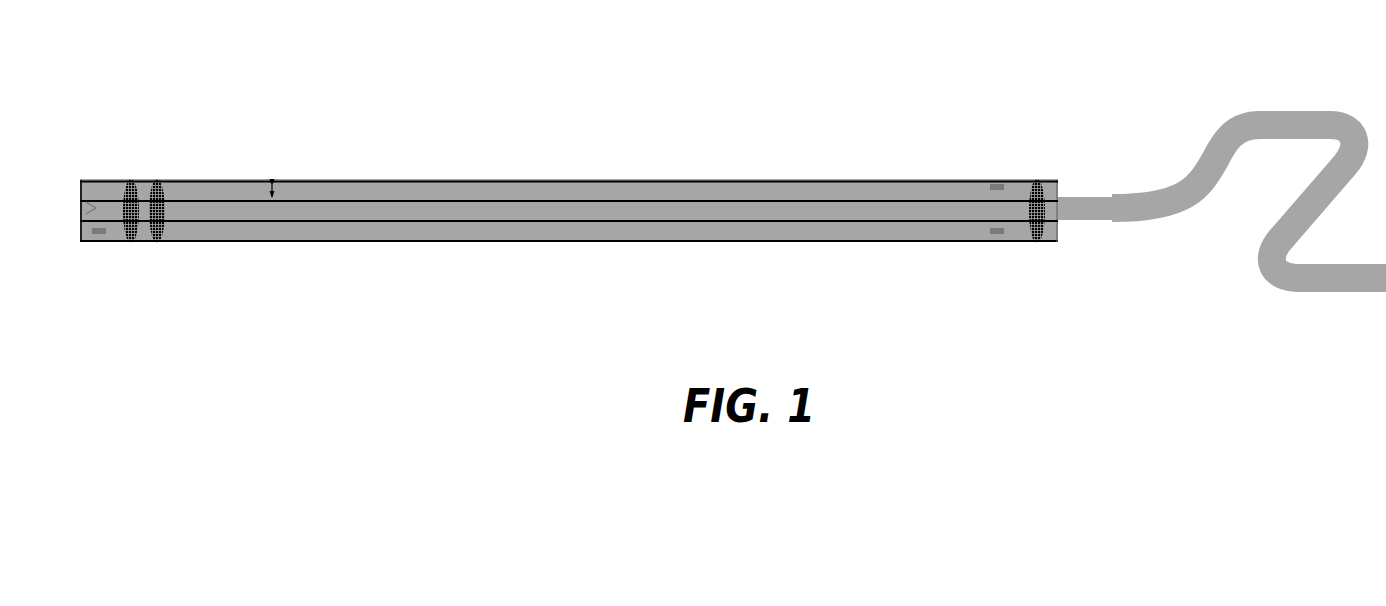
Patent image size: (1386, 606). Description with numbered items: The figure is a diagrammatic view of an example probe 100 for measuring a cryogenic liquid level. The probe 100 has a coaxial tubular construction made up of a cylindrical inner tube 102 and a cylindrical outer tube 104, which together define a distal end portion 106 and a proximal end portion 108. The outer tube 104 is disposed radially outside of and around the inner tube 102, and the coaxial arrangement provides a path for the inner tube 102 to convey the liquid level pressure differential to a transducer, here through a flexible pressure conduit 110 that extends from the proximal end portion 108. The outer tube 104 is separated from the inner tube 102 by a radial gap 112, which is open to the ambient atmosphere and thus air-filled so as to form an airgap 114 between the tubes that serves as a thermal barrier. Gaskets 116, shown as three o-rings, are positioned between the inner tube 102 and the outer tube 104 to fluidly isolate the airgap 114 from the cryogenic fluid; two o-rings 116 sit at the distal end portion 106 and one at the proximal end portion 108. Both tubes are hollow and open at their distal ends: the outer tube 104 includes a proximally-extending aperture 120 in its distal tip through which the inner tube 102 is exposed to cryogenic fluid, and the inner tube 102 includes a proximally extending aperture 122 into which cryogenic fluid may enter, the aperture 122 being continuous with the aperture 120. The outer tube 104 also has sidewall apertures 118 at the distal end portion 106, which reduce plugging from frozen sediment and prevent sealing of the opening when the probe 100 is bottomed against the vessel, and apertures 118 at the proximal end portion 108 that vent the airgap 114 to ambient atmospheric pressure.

The probe 100 is at (690, 46).
The inner tube 102 is at (543, 218).
The outer tube 104 is at (637, 242).
The distal end portion 106 is at (152, 94).
The proximal end portion 108 is at (988, 117).
The pressure conduit 110 is at (1133, 217).
The radial gap 112 is at (276, 190).
The airgap 114 is at (412, 191).
The gaskets 116 is at (131, 182).
The apertures 118 is at (1000, 183).
The aperture 120 is at (78, 204).
The aperture 122 is at (247, 210).